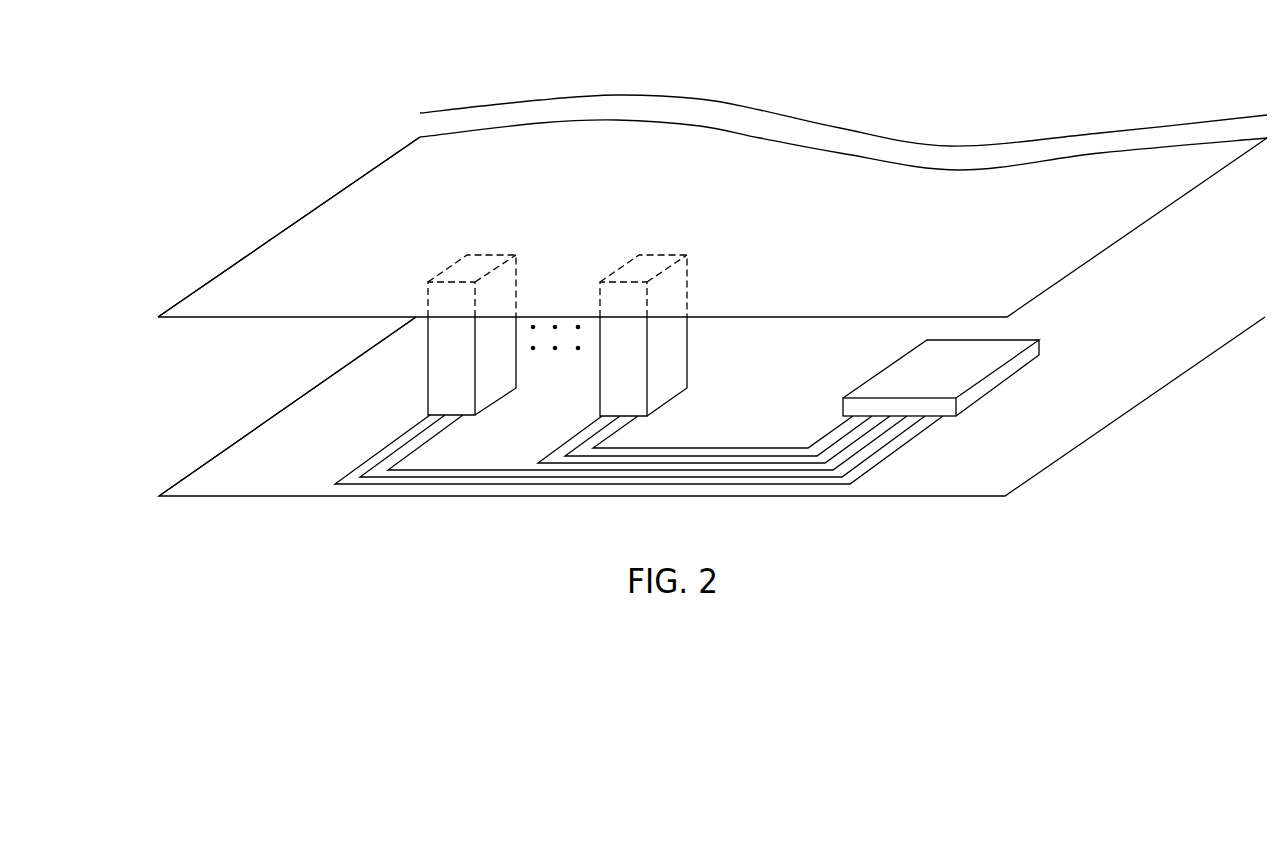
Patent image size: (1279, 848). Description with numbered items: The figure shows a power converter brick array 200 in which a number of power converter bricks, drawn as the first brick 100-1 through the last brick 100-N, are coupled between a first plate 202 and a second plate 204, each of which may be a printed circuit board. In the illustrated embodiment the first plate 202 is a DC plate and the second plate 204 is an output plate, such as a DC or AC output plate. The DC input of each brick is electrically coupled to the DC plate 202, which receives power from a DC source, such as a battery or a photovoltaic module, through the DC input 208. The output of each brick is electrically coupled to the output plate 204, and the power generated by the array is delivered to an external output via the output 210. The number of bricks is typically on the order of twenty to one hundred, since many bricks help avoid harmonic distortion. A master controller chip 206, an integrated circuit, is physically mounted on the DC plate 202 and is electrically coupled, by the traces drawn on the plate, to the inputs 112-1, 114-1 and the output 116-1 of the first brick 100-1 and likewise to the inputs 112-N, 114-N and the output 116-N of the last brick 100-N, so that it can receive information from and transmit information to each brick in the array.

The power converter brick array 200 is at (1111, 63).
The first plate 202 is at (213, 458).
The second plate 204 is at (209, 282).
The master controller chip 206 is at (955, 376).
The DC input 208 is at (271, 418).
The output 210 is at (289, 227).
The brick 100-1 is at (428, 401).
The brick 100-N is at (600, 401).
The input 112-1 is at (373, 485).
The input 114-1 is at (440, 477).
The output 116-1 is at (503, 470).
The input 112-N is at (693, 463).
The input 114-N is at (731, 456).
The output 116-N is at (785, 448).